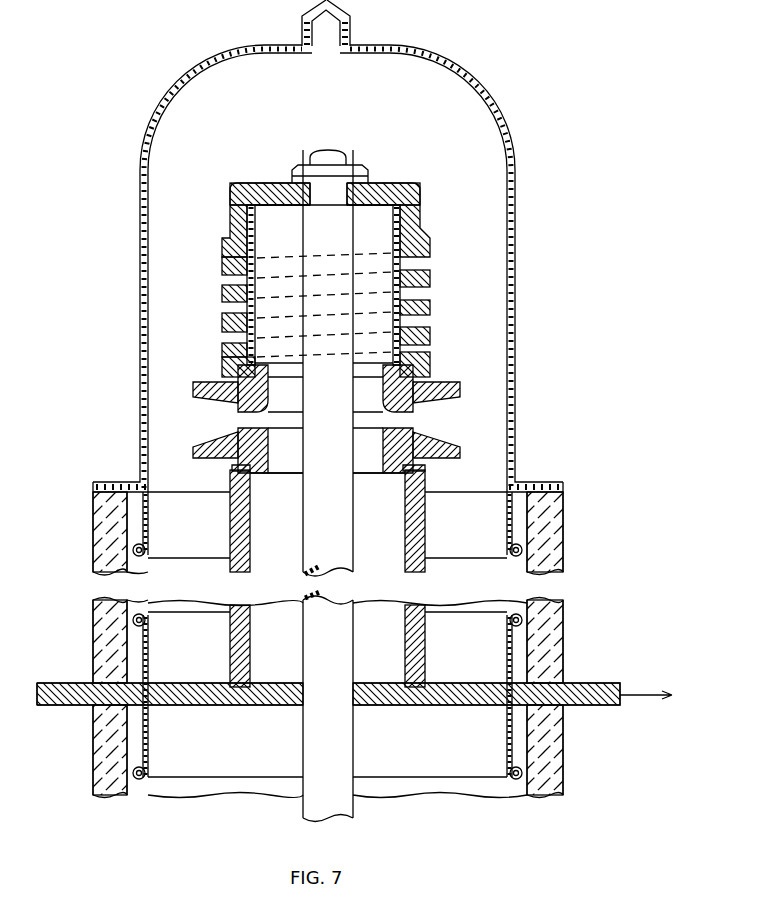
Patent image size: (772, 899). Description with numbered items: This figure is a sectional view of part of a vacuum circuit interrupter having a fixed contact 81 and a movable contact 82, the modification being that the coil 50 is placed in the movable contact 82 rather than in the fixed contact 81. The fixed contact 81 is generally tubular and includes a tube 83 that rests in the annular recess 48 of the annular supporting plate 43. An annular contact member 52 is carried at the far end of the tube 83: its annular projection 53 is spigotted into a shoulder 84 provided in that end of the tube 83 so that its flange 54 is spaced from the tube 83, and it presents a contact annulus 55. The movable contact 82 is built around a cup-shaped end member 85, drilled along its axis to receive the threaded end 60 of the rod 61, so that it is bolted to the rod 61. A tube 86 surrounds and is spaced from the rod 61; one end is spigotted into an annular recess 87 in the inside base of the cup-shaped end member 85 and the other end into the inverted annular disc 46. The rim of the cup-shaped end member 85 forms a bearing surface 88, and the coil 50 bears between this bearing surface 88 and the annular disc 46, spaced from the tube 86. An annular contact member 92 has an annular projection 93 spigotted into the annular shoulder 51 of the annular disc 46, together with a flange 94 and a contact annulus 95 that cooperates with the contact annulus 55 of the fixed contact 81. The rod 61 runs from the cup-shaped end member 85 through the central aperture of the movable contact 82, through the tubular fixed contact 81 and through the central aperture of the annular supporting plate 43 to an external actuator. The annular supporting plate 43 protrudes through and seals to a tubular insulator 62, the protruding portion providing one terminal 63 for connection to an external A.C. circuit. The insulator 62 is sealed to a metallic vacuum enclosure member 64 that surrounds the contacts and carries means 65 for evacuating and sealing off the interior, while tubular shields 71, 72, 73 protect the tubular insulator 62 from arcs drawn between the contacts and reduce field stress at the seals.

The annular supporting plate 43 is at (190, 683).
The annular disc 46 is at (224, 362).
The annular recess 48 is at (240, 690).
The coil 50 is at (432, 308).
The annular shoulder 51 is at (432, 356).
The annular contact member 52 is at (355, 446).
The annular projection 53 is at (406, 472).
The flange 54 is at (204, 448).
The contact annulus 55 is at (418, 436).
The threaded end 60 is at (352, 178).
The rod 61 is at (337, 520).
The tubular insulator 62 is at (93, 530).
The terminal 63 is at (619, 687).
The metallic vacuum enclosure member 64 is at (178, 96).
The means for evacuating and sealing off 65 is at (304, 17).
The tubular shield 71 is at (508, 541).
The tubular shield 72 is at (506, 640).
The tubular shield 73 is at (507, 740).
The fixed contact 81 is at (223, 522).
The movable contact 82 is at (247, 173).
The tube 83 is at (427, 524).
The cap 84 is at (233, 471).
The cup-shaped end member 85 is at (420, 197).
The tube 86 is at (236, 310).
The annular recess 87 is at (250, 204).
The bearing surface 88 is at (432, 265).
The annular contact member 92 is at (365, 389).
The annular projection 93 is at (430, 400).
The flange 94 is at (205, 398).
The contact annulus 95 is at (250, 412).